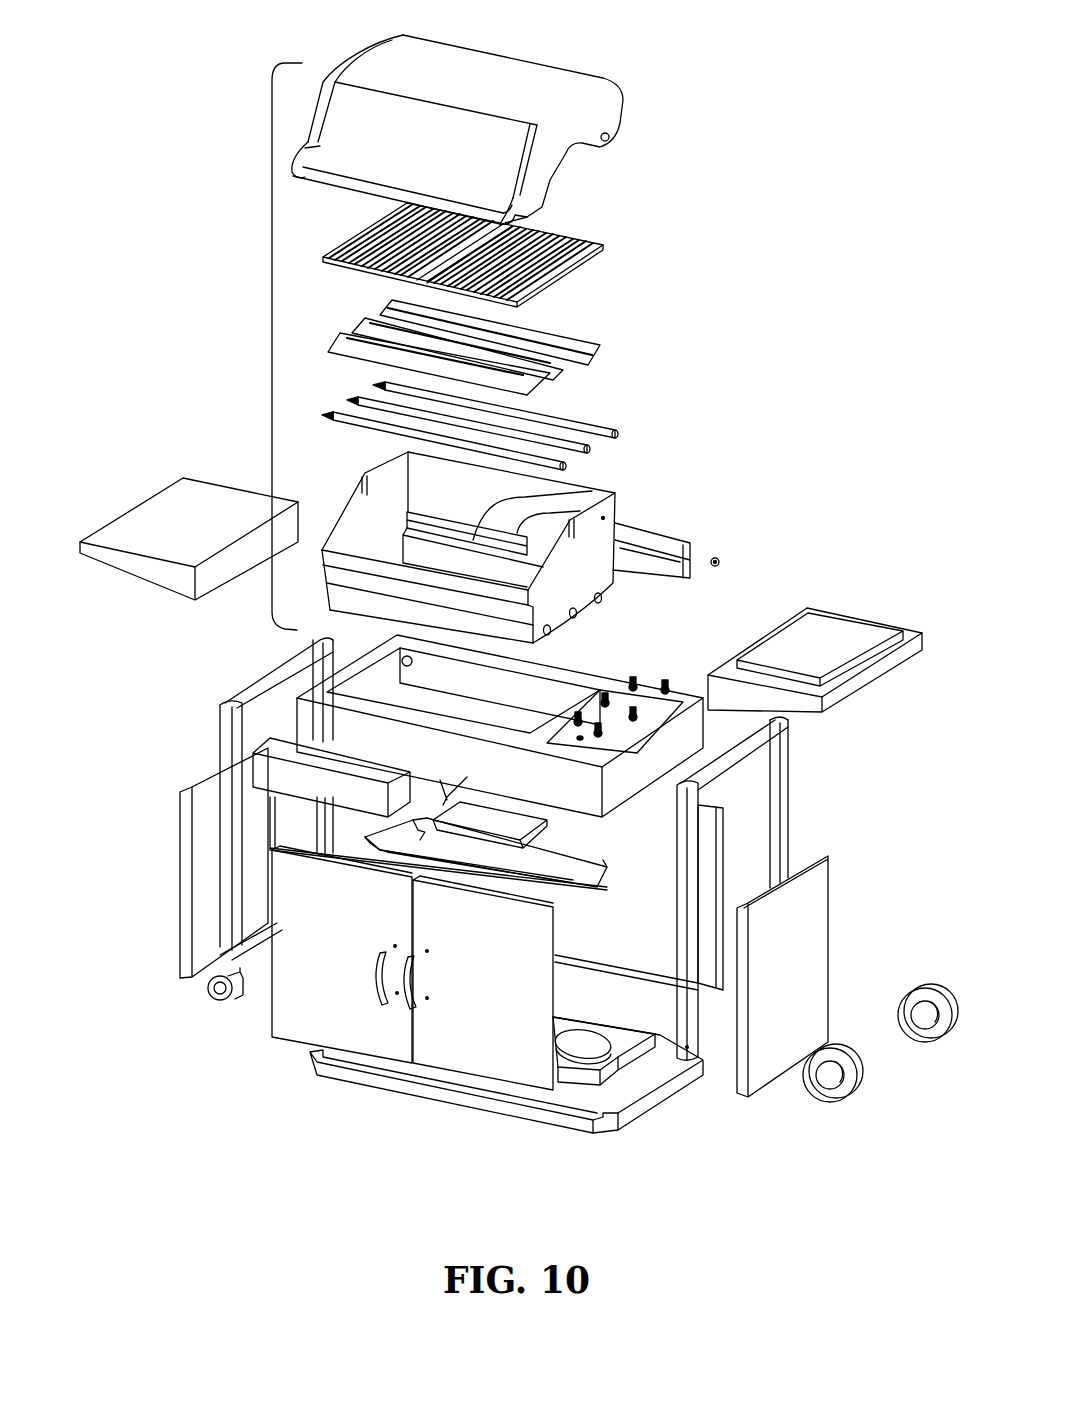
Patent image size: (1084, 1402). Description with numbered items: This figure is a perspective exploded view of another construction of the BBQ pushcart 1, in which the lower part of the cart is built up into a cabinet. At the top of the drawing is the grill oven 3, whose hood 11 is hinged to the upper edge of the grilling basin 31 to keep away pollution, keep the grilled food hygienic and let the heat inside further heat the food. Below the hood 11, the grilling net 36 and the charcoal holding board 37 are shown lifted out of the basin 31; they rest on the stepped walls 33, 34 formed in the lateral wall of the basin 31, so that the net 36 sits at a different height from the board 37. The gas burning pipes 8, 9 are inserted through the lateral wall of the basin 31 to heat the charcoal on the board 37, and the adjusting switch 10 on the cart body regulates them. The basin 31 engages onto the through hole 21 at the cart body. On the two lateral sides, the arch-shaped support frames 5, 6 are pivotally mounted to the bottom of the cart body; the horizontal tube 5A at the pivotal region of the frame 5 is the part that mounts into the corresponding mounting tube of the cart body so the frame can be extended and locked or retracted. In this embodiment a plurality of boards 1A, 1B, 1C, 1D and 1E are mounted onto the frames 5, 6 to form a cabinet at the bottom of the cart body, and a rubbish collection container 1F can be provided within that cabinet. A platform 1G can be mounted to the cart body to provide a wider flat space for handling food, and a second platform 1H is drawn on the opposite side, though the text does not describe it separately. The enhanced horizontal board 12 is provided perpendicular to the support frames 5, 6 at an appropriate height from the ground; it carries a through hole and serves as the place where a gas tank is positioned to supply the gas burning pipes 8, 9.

The BBQ pushcart 1 is at (160, 862).
The board 1A is at (200, 955).
The board 1B is at (638, 953).
The board 1C is at (800, 947).
The board 1D is at (525, 1112).
The board 1E is at (315, 1005).
The rubbish collection container 1F is at (568, 863).
The platform 1G is at (788, 635).
The left side shelf 1H is at (173, 578).
The grill oven 3 is at (271, 330).
The support frame 5 is at (228, 812).
The horizontal tube 5A is at (263, 690).
The support frame 6 is at (777, 783).
The gas burning pipe 8 is at (597, 457).
The gas burning pipe 9 is at (603, 425).
The adjusting switch 10 is at (673, 702).
The hood 11 is at (543, 83).
The enhanced horizontal board 12 is at (627, 1050).
The through hole 21 is at (517, 723).
The grilling basin 31 is at (597, 578).
The stepped wall 33 is at (477, 527).
The stepped wall 34 is at (577, 517).
The grilling net 36 is at (593, 260).
The charcoal holding board 37 is at (560, 347).